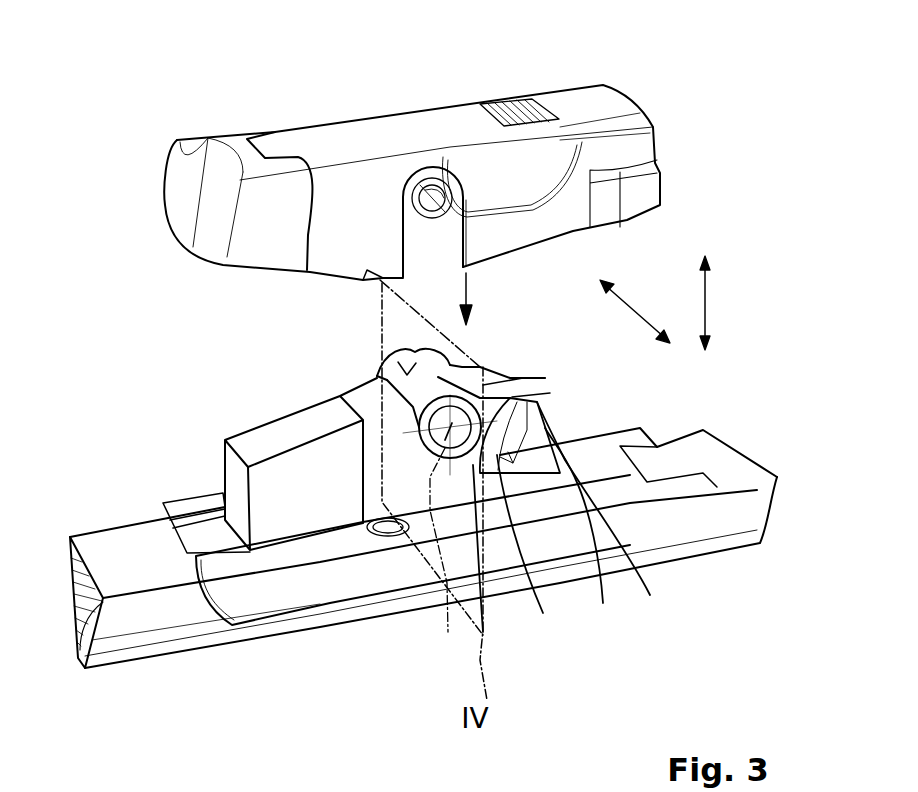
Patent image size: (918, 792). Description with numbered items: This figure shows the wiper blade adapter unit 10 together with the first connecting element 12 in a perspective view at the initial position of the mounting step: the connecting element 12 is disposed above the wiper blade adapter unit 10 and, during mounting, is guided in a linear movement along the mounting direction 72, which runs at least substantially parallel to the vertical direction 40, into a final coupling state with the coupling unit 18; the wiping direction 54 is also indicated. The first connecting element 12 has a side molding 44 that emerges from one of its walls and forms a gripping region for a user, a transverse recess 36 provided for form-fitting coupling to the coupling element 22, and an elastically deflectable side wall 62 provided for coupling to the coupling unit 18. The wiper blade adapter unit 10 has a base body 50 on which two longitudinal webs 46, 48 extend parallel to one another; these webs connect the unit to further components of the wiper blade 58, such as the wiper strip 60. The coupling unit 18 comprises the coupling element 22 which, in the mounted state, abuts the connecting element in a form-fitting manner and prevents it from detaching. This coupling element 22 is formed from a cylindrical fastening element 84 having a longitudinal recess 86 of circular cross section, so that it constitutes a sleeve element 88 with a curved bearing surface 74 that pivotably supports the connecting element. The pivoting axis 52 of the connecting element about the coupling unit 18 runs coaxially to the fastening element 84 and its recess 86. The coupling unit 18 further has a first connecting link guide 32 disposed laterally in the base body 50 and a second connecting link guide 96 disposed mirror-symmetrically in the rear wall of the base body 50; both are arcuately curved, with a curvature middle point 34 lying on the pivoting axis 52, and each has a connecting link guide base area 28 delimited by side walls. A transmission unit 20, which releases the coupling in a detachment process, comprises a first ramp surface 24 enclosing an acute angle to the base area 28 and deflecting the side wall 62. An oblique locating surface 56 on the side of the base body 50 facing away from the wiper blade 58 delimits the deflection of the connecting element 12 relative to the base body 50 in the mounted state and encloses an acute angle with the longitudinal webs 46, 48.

The wiper blade adapter unit 10 is at (217, 368).
The first connecting element 12 is at (548, 52).
The coupling unit 18 is at (537, 367).
The transmission unit 20 is at (550, 393).
The coupling element 22 is at (440, 374).
The first ramp surface 24 is at (522, 550).
The connecting link guide base area 28 is at (582, 532).
The first connecting link guide 32 is at (601, 514).
The curvature middle point 34 is at (416, 554).
The transverse recess 36 is at (428, 186).
The vertical direction 40 is at (707, 303).
The side molding 44 is at (640, 200).
The longitudinal web 46 is at (270, 590).
The longitudinal web 48 is at (190, 507).
The base body 50 is at (308, 510).
The pivoting axis 52 is at (377, 371).
The wiping direction 54 is at (638, 313).
The oblique locating surface 56 is at (273, 432).
The wiper blade 58 is at (97, 697).
The wiper strip 60 is at (147, 607).
The first elastically deflectable side wall 62 is at (367, 272).
The mounting direction 72 is at (466, 285).
The curved bearing surface 74 is at (382, 358).
The cylindrical fastening element 84 is at (483, 367).
The longitudinal recess 86 is at (448, 490).
The sleeve element 88 is at (408, 357).
The second connecting link guide 96 is at (545, 378).